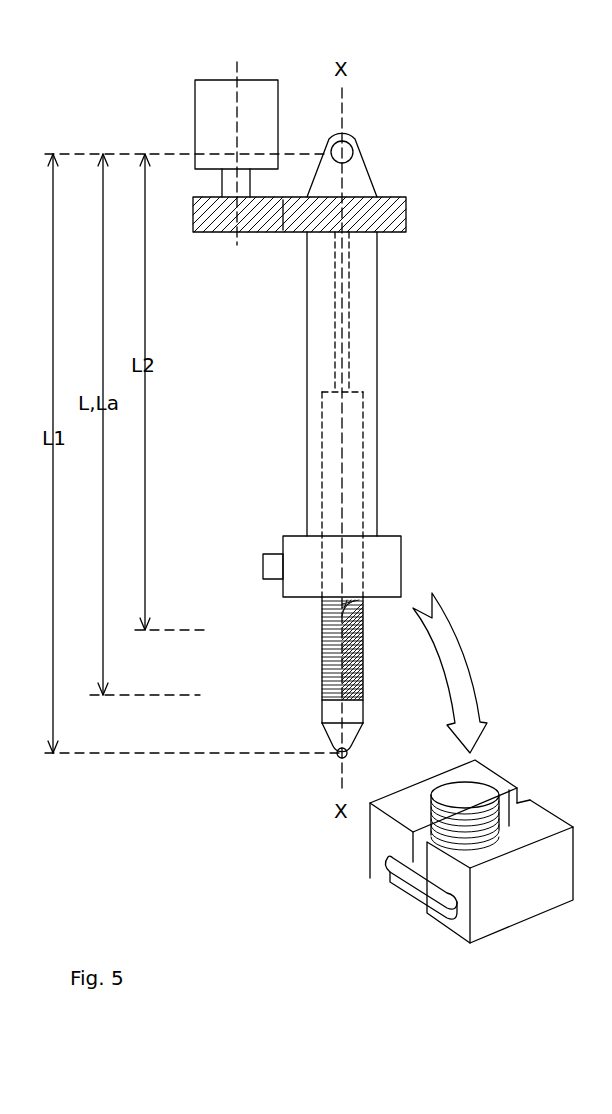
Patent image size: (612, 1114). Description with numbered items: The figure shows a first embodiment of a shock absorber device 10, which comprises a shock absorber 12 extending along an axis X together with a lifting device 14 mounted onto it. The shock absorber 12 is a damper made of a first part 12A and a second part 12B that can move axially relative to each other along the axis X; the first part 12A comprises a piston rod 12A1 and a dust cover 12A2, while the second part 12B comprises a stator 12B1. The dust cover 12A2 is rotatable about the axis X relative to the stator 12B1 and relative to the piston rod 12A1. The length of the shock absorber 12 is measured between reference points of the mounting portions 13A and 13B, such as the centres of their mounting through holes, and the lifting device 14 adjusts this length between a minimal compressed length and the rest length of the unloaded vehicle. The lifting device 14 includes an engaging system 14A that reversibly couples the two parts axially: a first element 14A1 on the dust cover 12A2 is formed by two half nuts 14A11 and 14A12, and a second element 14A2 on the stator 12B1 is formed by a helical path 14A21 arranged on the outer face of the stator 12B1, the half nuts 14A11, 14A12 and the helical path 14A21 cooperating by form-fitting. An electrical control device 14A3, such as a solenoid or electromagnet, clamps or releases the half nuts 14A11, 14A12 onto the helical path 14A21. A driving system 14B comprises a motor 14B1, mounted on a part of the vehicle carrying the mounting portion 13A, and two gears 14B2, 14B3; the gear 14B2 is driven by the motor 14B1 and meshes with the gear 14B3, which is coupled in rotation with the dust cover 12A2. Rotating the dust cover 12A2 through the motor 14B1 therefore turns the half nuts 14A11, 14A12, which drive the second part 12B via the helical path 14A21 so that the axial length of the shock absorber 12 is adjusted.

The shock absorber device 10 is at (100, 110).
The shock absorber 12 is at (400, 284).
The first part 12A is at (414, 414).
The piston rod 12A1 is at (352, 337).
The dust cover 12A2 is at (366, 405).
The second part 12B is at (376, 660).
The stator 12B1 is at (363, 640).
The mounting portion 13A is at (358, 186).
The mounting portion 13B is at (335, 745).
The lifting device 14 is at (214, 360).
The engaging system 14A is at (283, 496).
The first element 14A1 is at (285, 590).
The half nut 14A11 is at (392, 838).
The half nut 14A12 is at (452, 930).
The second element 14A2 is at (322, 636).
The helical path 14A21 is at (240, 677).
The electrical control device 14A3 is at (264, 556).
The driving system 14B is at (285, 313).
The motor 14B1 is at (206, 98).
The gear 14B2 is at (205, 233).
The gear 14B3 is at (290, 233).